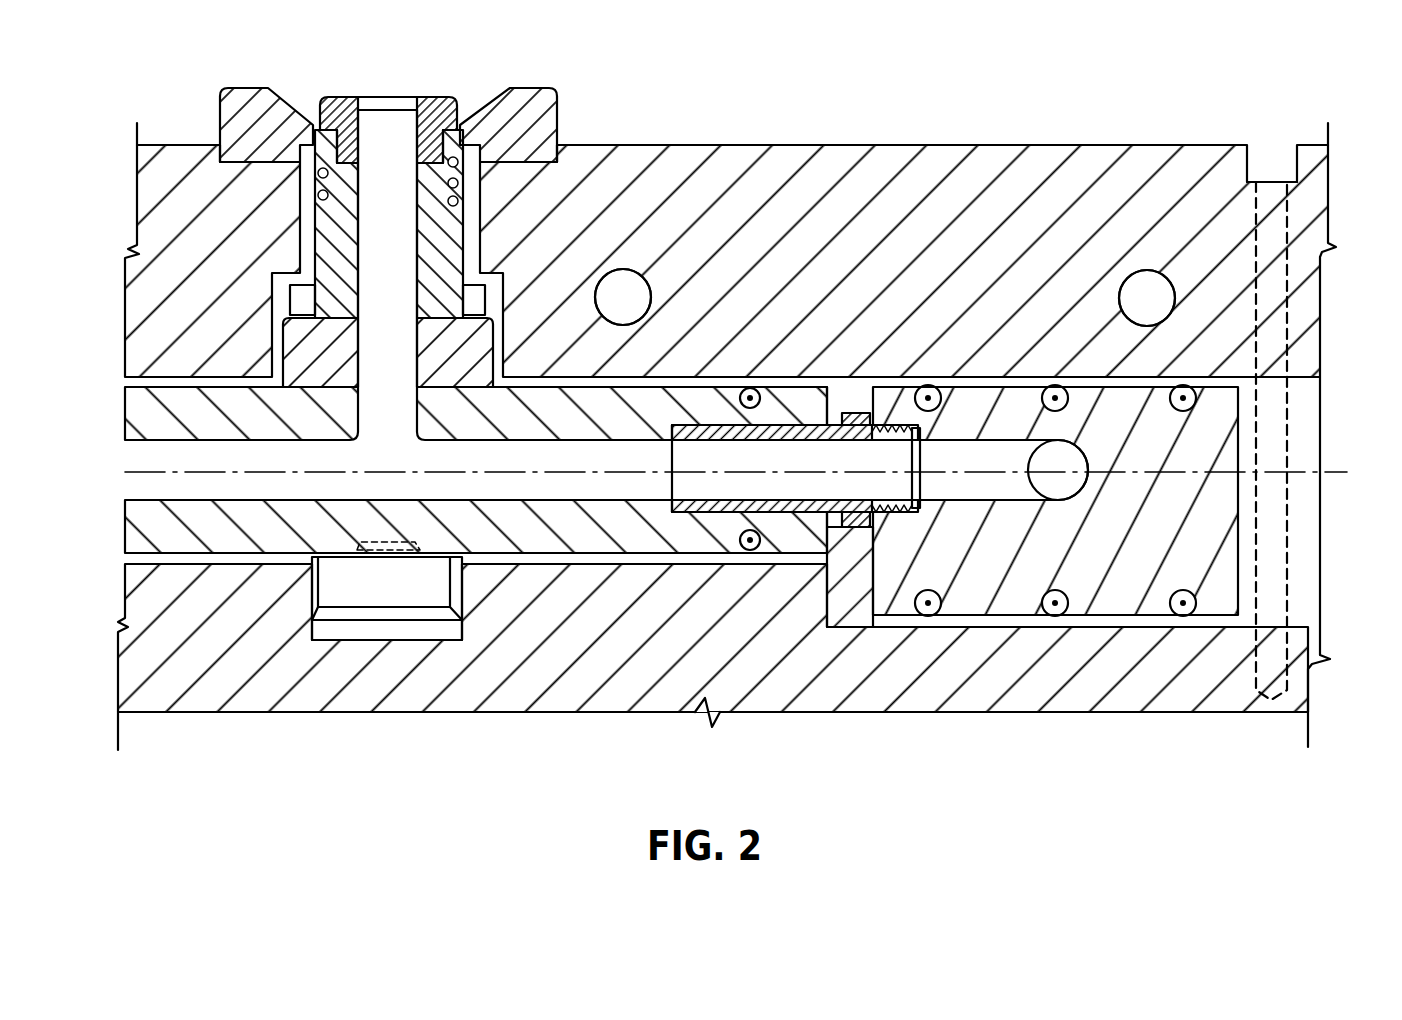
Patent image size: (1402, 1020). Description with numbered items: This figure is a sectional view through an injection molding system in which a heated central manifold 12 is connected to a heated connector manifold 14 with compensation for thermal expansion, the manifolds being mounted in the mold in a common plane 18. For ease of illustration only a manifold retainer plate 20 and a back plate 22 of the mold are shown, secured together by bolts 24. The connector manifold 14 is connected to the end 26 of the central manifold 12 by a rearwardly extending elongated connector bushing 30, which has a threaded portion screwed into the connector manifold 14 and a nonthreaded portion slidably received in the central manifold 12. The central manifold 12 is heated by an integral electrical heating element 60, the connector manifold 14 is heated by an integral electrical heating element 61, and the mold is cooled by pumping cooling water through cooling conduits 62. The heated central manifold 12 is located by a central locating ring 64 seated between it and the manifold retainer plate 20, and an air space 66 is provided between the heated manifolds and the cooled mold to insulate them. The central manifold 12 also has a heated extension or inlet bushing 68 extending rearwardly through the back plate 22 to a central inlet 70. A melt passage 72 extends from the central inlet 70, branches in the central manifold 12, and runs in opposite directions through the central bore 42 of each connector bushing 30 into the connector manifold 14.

The central manifold 12 is at (150, 528).
The connector manifold 14 is at (1218, 505).
The common plane 18 is at (1330, 468).
The manifold retainer plate 20 is at (615, 690).
The back plate 22 is at (790, 158).
The bolts 24 is at (1272, 202).
The end 26 is at (838, 415).
The connector bushing 30 is at (860, 408).
The central bore 42 is at (790, 450).
The electrical heating element 60 is at (750, 388).
The electrical heating element 61 is at (1055, 607).
The cooling conduits 62 is at (627, 283).
The central locating ring 64 is at (380, 630).
The air space 66 is at (847, 607).
The inlet bushing 68 is at (327, 223).
The central inlet 70 is at (388, 100).
The melt passage 72 is at (155, 455).